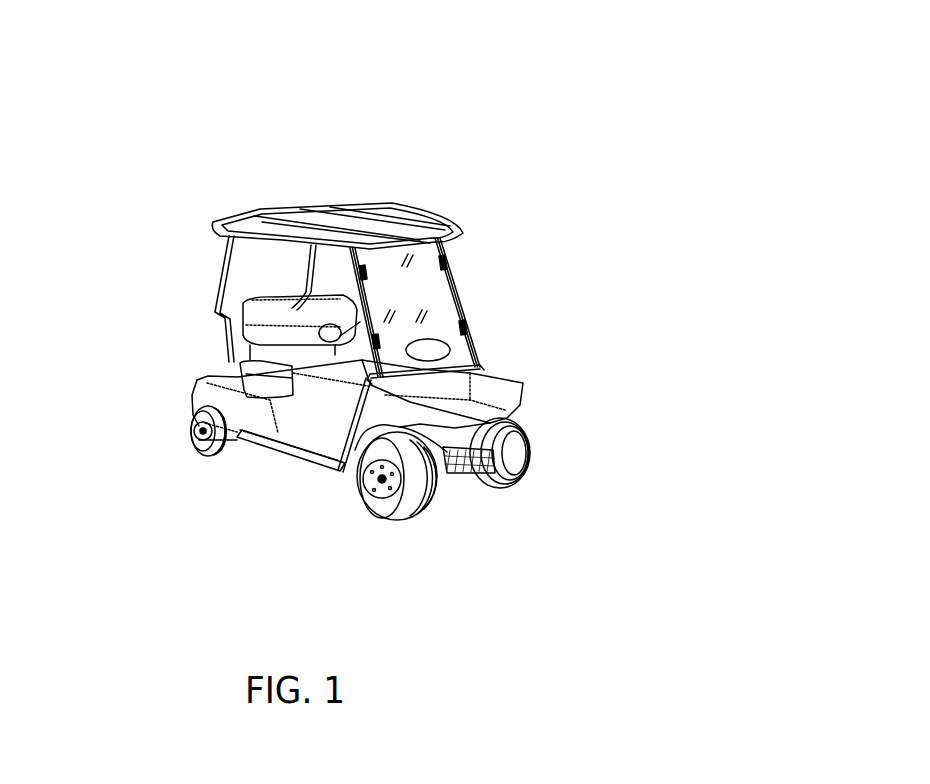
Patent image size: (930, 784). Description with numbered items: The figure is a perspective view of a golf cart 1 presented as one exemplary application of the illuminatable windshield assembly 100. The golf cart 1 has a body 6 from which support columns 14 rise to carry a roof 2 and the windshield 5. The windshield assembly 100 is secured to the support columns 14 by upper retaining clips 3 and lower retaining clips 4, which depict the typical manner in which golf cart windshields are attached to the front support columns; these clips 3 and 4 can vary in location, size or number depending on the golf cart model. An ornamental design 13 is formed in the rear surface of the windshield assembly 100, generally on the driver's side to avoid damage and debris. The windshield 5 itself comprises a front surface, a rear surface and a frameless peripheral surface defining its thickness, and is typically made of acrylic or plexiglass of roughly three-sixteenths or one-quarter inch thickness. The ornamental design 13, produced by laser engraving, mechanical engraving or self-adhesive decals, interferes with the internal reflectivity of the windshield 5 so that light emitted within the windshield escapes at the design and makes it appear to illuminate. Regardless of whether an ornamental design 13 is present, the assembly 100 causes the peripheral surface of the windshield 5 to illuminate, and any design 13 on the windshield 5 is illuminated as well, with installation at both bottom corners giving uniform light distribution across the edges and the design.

The golf cart 1 is at (408, 321).
The roof 2 is at (280, 212).
The upper retaining clips 3 is at (371, 274).
The lower retaining clips 4 is at (465, 343).
The windshield 5 is at (432, 293).
The body 6 is at (473, 399).
The ornamental design 13 is at (434, 337).
The support columns 14 is at (450, 305).
The illuminatable windshield assembly 100 is at (443, 247).